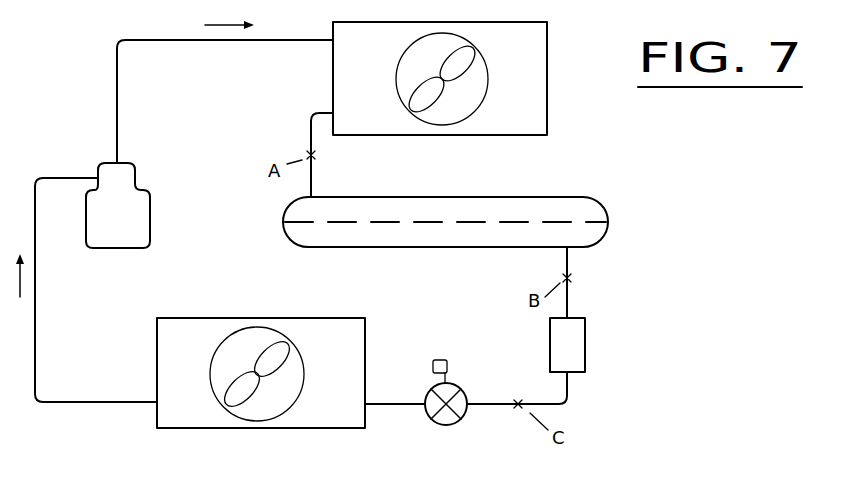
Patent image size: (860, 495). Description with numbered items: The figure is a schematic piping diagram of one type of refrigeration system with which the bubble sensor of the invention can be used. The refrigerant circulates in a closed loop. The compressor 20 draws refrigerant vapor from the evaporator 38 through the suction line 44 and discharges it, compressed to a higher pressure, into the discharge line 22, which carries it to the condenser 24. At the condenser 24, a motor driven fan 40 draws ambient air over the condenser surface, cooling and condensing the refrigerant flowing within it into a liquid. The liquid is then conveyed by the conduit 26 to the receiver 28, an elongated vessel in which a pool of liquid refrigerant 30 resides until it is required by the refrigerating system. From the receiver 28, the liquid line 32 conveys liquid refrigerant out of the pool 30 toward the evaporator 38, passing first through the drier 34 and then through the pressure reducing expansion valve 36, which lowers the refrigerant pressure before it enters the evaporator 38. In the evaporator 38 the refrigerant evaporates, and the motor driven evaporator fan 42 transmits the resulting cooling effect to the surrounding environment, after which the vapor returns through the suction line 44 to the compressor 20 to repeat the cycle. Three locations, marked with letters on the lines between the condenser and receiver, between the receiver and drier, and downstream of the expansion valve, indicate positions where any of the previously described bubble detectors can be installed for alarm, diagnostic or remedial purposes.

The compressor 20 is at (118, 205).
The discharge line 22 is at (181, 47).
The condenser 24 is at (440, 78).
The conduit 26 is at (316, 180).
The receiver 28 is at (473, 229).
The pool of liquid refrigerant 30 is at (445, 233).
The liquid line 32 is at (571, 308).
The drier 34 is at (585, 345).
The pressure reducing expansion valve 36 is at (460, 425).
The evaporator 38 is at (261, 373).
The motor driven fan 40 is at (462, 60).
The motor driven evaporator fan 42 is at (272, 363).
The suction line 44 is at (73, 397).